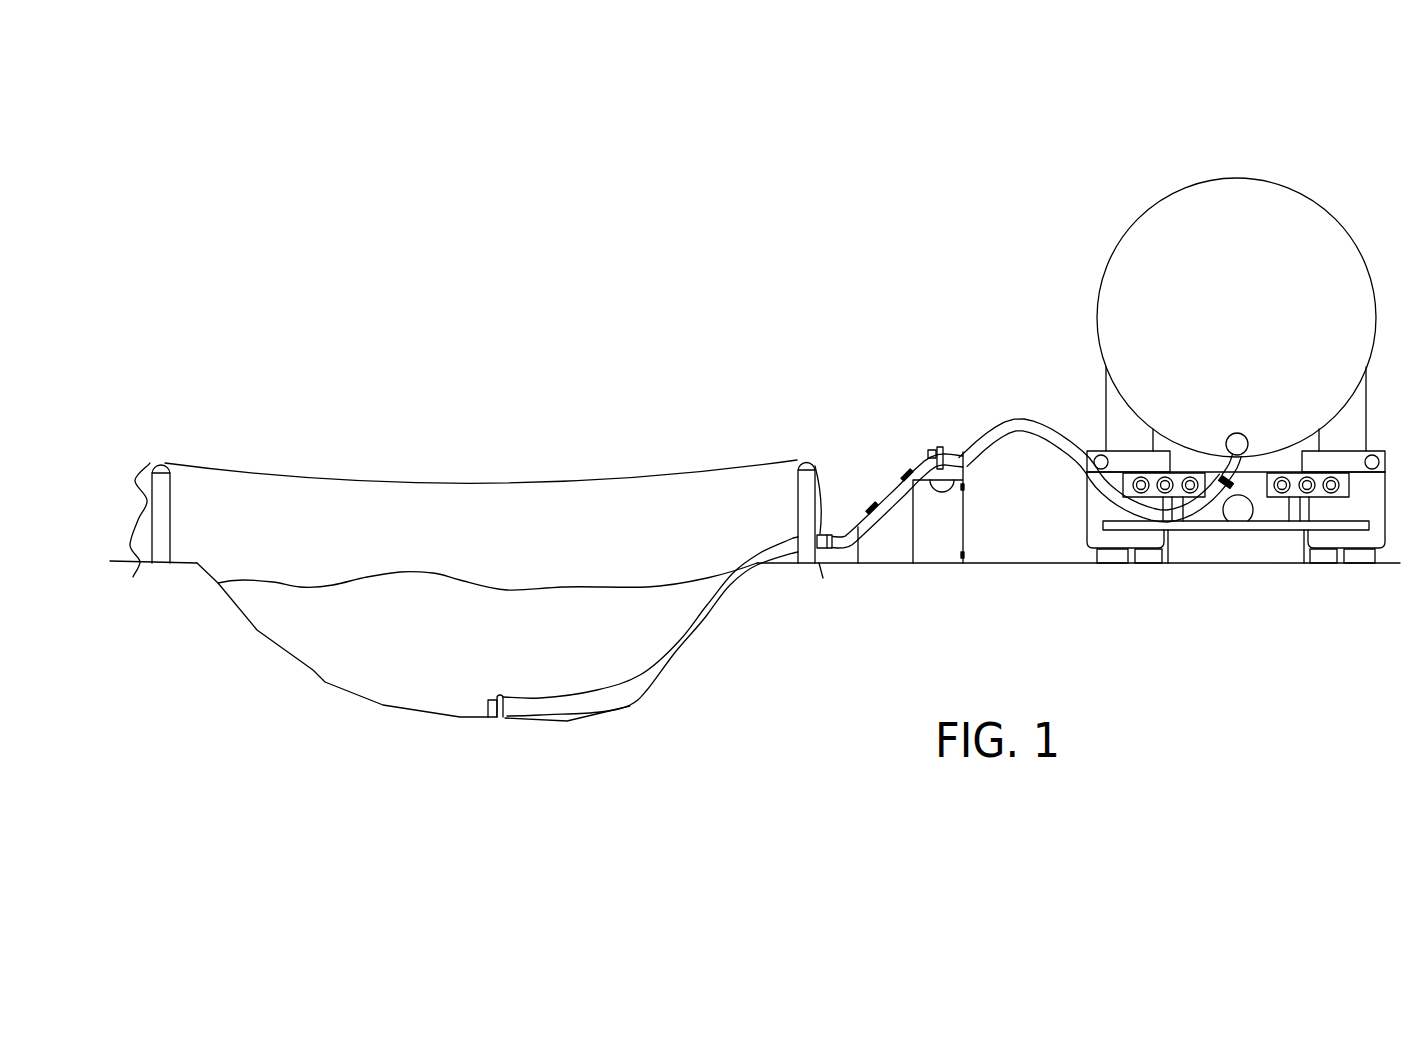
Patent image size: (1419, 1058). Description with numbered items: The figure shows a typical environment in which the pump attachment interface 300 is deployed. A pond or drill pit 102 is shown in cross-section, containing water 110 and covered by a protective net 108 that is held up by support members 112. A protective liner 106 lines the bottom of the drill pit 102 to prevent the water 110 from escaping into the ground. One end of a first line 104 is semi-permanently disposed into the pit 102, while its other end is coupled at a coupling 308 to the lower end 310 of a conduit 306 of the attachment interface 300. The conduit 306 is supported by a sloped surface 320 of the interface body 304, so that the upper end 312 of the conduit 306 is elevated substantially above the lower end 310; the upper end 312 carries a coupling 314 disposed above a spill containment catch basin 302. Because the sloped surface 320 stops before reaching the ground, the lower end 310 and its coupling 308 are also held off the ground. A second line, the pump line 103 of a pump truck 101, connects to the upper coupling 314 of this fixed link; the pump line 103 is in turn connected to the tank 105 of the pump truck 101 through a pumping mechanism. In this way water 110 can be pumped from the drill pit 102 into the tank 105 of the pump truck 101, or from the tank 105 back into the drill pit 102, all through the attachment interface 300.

The pump truck 101 is at (1125, 190).
The pond or drill pit 102 is at (325, 683).
The pump line 103 is at (1065, 453).
The first line 104 is at (706, 622).
The tank 105 is at (1117, 313).
The protective liner 106 is at (598, 713).
The protective net 108 is at (386, 470).
The water 110 is at (403, 680).
The support members 112 is at (172, 510).
The pump attachment interface 300 is at (887, 440).
The spill containment catch basin 302 is at (940, 493).
The interface body 304 is at (963, 505).
The conduit 306 is at (842, 551).
The coupling 308 is at (826, 551).
The lower end 310 is at (836, 512).
The upper end 312 is at (951, 432).
The coupling 314 is at (940, 447).
The sloped surface 320 is at (889, 480).